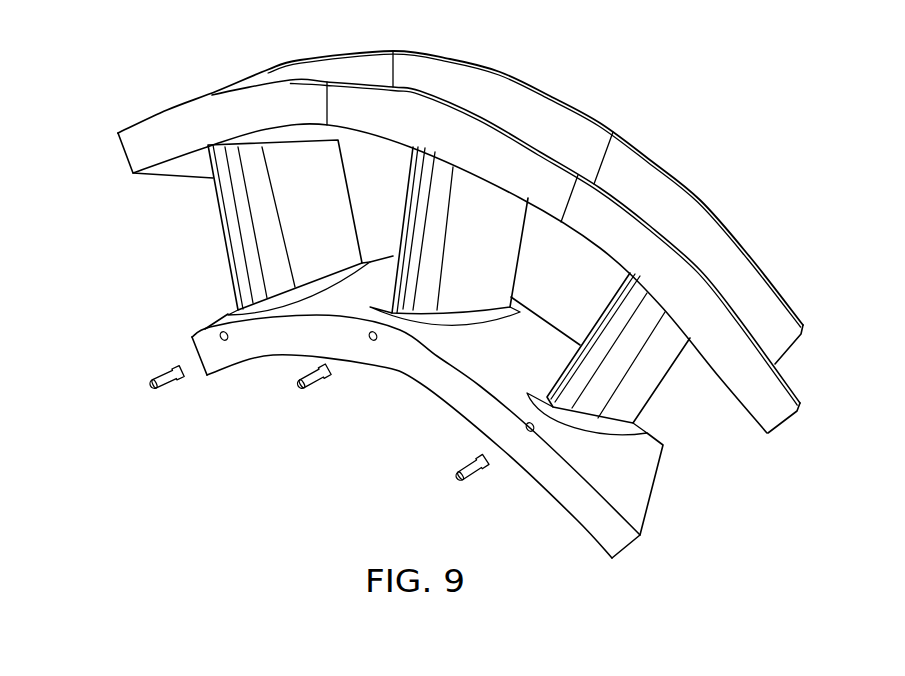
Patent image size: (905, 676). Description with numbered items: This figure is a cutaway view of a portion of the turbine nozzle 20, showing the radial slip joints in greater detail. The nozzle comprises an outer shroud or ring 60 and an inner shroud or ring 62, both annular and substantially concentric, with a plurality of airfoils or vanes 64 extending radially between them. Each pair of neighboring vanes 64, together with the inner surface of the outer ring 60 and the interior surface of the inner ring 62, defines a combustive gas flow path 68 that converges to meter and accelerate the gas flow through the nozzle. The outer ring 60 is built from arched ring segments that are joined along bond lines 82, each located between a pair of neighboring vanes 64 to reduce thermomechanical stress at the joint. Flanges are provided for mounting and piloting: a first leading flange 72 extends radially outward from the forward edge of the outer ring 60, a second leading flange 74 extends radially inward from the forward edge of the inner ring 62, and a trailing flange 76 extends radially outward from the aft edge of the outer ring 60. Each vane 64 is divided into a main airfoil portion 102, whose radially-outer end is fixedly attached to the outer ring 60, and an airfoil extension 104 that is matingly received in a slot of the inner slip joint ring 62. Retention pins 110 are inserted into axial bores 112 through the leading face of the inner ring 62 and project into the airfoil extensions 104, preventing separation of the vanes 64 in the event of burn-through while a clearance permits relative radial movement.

The turbine nozzle 20 is at (427, 294).
The outer ring 60 is at (463, 277).
The inner ring 62 is at (427, 407).
The vane 64 is at (390, 238).
The gas flow path 68 is at (208, 205).
The first leading flange 72 is at (286, 97).
The second leading flange 74 is at (445, 392).
The trailing flange 76 is at (500, 75).
The bond line 82 is at (395, 74).
The main airfoil portion 102 is at (327, 226).
The airfoil extension 104 is at (302, 290).
The retention pin 110 is at (170, 389).
The axial bore 112 is at (200, 335).